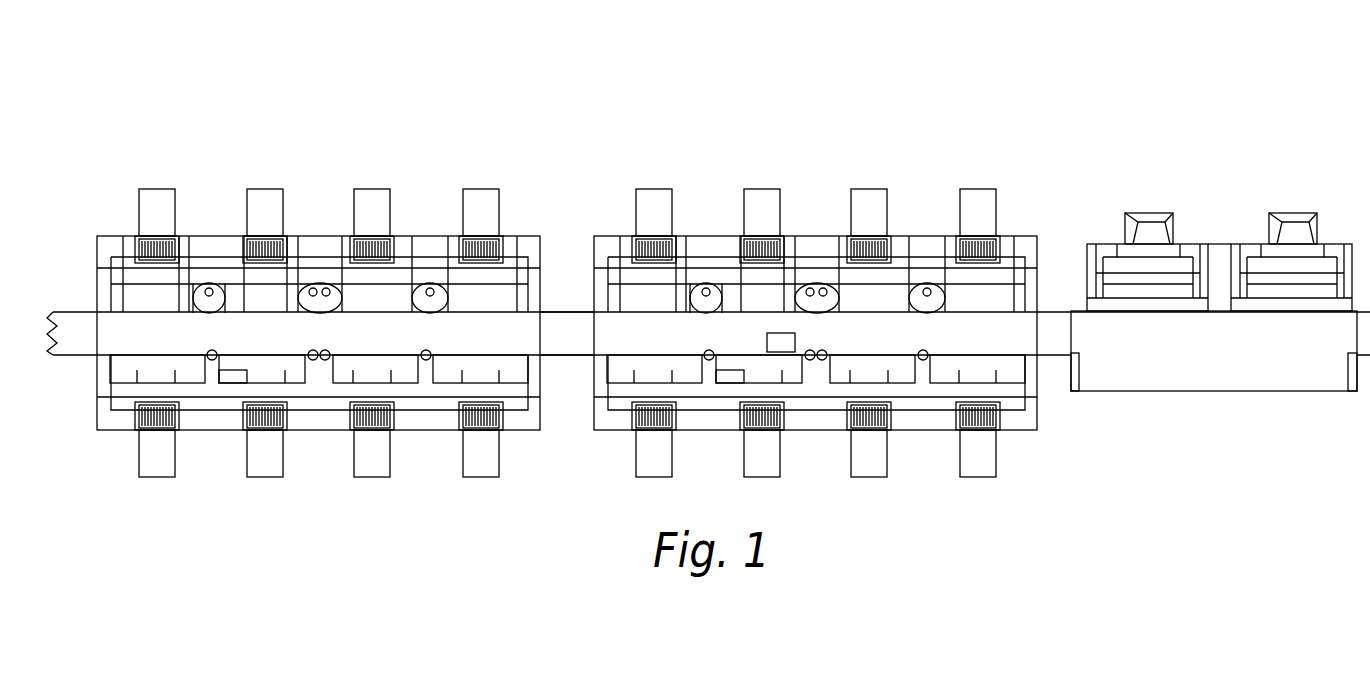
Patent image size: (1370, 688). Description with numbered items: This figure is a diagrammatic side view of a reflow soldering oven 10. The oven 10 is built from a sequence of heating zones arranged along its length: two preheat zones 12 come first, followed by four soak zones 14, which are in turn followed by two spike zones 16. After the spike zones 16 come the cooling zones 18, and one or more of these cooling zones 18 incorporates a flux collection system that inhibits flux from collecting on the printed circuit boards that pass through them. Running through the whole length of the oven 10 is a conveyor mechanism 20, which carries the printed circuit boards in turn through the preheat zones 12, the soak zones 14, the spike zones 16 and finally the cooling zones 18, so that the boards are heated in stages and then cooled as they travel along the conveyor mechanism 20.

The reflow soldering oven 10 is at (901, 117).
The preheat zones 12 is at (213, 327).
The soak zones 14 is at (530, 327).
The spike zones 16 is at (888, 328).
The cooling zones 18 is at (1214, 327).
The conveyor mechanism 20 is at (565, 353).